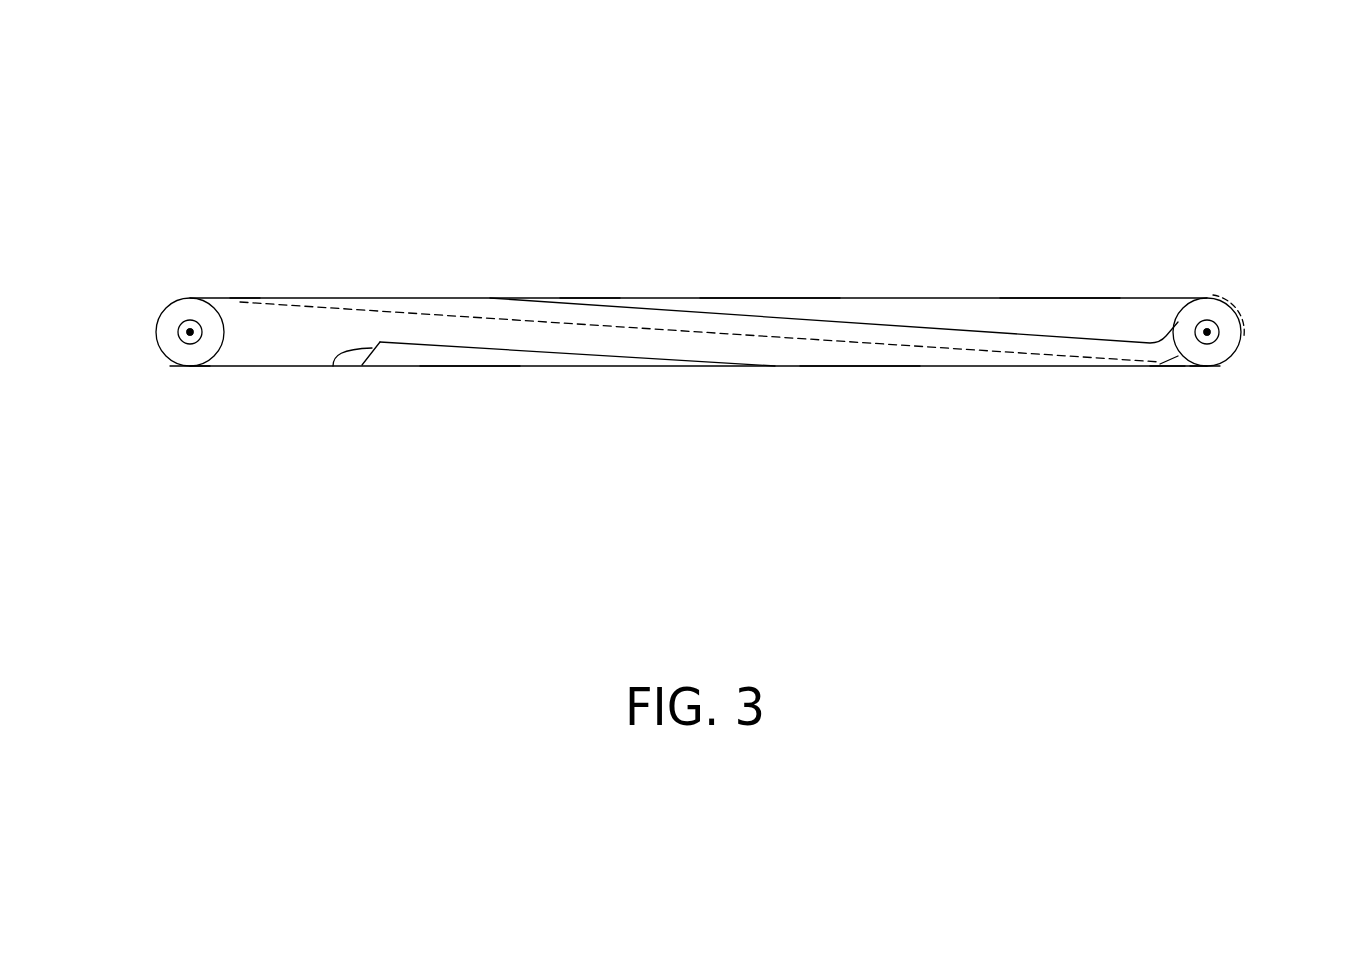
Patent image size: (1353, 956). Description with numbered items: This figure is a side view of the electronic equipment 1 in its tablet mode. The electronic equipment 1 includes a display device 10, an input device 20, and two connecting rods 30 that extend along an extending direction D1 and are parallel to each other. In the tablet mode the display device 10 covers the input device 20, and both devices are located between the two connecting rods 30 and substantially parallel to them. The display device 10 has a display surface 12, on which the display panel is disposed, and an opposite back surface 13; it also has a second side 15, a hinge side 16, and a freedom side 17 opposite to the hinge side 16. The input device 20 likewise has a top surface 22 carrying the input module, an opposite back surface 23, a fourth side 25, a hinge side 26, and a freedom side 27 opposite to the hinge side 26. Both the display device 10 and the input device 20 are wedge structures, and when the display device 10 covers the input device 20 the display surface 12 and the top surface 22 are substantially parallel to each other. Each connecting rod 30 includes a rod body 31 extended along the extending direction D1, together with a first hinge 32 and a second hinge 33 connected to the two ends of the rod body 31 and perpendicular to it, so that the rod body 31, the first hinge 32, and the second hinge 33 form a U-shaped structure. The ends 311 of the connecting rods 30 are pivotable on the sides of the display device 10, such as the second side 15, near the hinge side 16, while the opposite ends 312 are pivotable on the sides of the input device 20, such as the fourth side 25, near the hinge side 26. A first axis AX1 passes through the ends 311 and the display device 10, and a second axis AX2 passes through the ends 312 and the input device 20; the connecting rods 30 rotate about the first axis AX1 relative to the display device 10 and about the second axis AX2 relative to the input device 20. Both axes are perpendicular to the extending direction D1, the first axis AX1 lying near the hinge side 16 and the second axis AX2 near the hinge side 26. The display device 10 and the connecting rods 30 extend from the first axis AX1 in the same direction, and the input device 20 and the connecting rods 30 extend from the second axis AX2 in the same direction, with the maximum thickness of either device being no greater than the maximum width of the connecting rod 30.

The electronic equipment 1 is at (1052, 56).
The display device 10 is at (927, 299).
The display surface 12 is at (768, 300).
The back surface 13 is at (592, 300).
The second side 15 is at (1060, 312).
The hinge side 16 is at (1229, 305).
The freedom side 17 is at (238, 300).
The input device 20 is at (397, 368).
The top surface 22 is at (462, 367).
The back surface 23 is at (547, 322).
The fourth side 25 is at (333, 366).
The hinge side 26 is at (168, 304).
The freedom side 27 is at (1175, 366).
The connecting rod 30 is at (665, 305).
The rod body 31 is at (860, 358).
The end of connecting rod 311 is at (1203, 370).
The end of connecting rod 312 is at (183, 368).
The first hinge 32 is at (1244, 330).
The second hinge 33 is at (155, 329).
The first axis AX1 is at (1207, 332).
The second axis AX2 is at (190, 332).
The extending direction D1 is at (1003, 398).